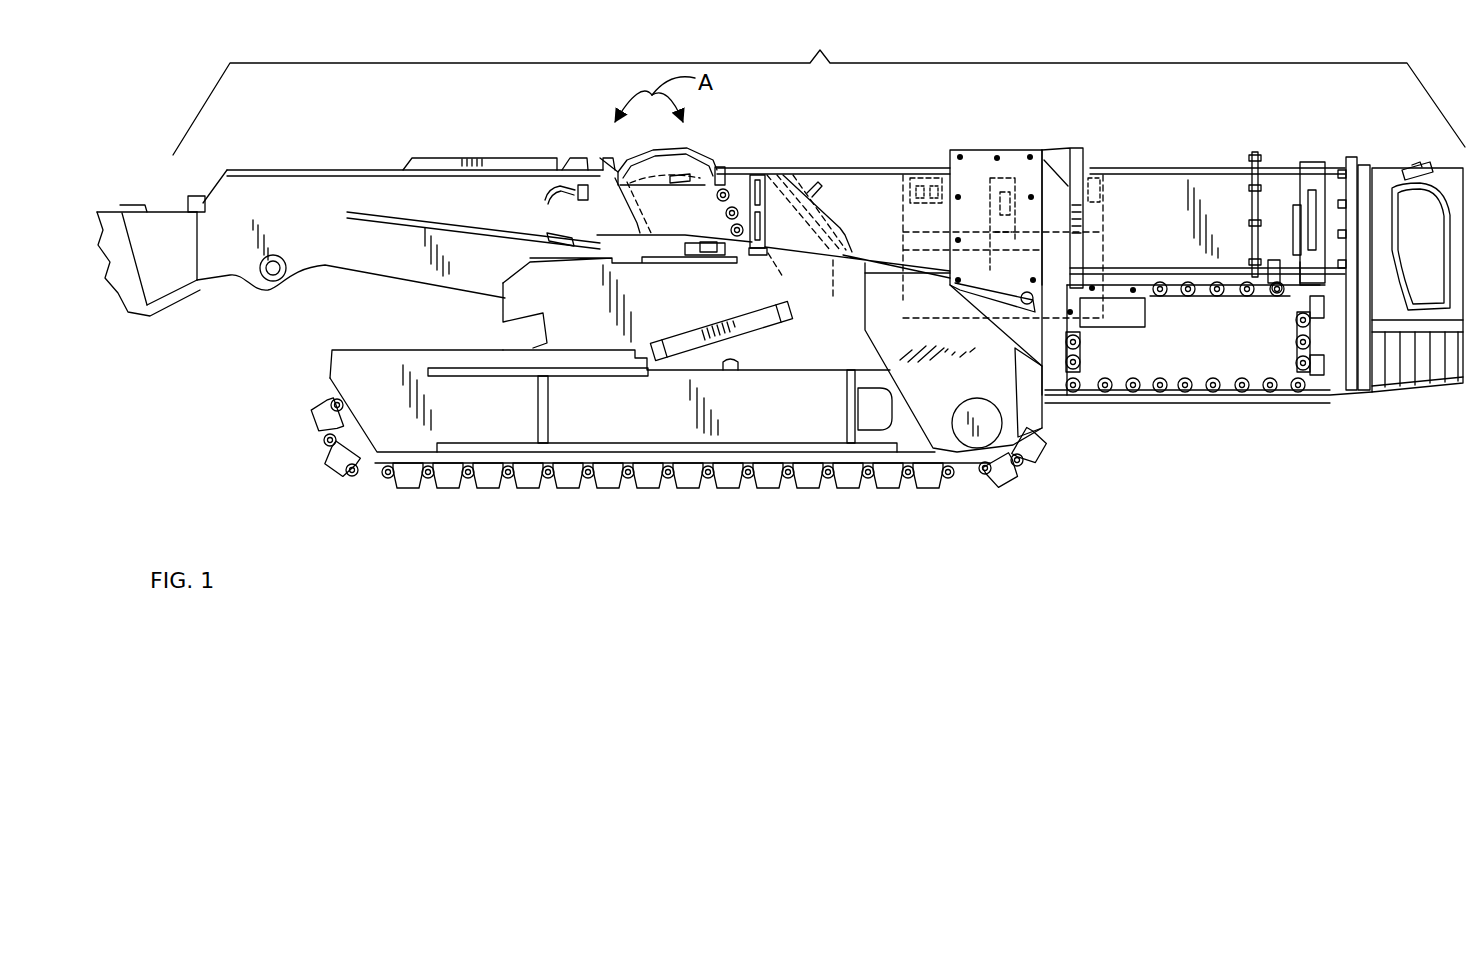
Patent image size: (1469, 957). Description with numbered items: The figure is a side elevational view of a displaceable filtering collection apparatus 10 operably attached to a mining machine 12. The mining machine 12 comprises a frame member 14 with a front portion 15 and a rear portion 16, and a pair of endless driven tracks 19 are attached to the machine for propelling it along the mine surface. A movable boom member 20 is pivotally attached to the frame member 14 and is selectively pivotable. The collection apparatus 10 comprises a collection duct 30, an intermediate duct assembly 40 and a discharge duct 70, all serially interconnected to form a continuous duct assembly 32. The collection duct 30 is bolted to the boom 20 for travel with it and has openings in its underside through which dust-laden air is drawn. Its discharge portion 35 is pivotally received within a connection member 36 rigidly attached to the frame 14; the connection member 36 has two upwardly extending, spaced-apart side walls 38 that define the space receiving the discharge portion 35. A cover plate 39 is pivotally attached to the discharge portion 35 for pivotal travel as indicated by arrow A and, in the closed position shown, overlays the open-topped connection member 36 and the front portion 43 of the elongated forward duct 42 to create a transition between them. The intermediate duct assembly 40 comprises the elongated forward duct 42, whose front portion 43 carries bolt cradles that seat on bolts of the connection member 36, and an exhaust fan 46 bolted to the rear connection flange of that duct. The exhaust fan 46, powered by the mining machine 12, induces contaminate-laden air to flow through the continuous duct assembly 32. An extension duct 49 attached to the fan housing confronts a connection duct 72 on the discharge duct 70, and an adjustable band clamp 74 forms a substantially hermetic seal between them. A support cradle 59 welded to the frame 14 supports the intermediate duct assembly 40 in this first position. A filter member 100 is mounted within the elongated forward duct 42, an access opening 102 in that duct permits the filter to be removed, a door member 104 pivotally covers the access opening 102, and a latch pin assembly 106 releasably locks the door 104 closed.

The collection apparatus 10 is at (900, 151).
The mining machine 12 is at (324, 379).
The frame member 14 is at (652, 421).
The front portion 15 is at (333, 346).
The rear portion 16 is at (1050, 438).
The endless driven tracks 19 is at (806, 494).
The movable boom member 20 is at (357, 249).
The collection duct 30 is at (459, 204).
The continuous duct assembly 32 is at (819, 88).
The discharge portion 35 is at (600, 167).
The connection member 36 is at (625, 211).
The side walls 38 is at (702, 224).
The cover plate 39 is at (692, 150).
The intermediate duct assembly 40 is at (992, 147).
The elongated forward duct 42 is at (892, 213).
The front portion 43 is at (752, 162).
The exhaust fan 46 is at (1175, 225).
The extension duct 49 is at (1295, 223).
The support cradle 59 is at (1270, 288).
The discharge duct 70 is at (1395, 168).
The connection duct 72 is at (1341, 177).
The adjustable band clamp 74 is at (1301, 263).
The filter member 100 is at (752, 330).
The access opening 102 is at (800, 276).
The door member 104 is at (810, 249).
The latch pin assembly 106 is at (808, 182).